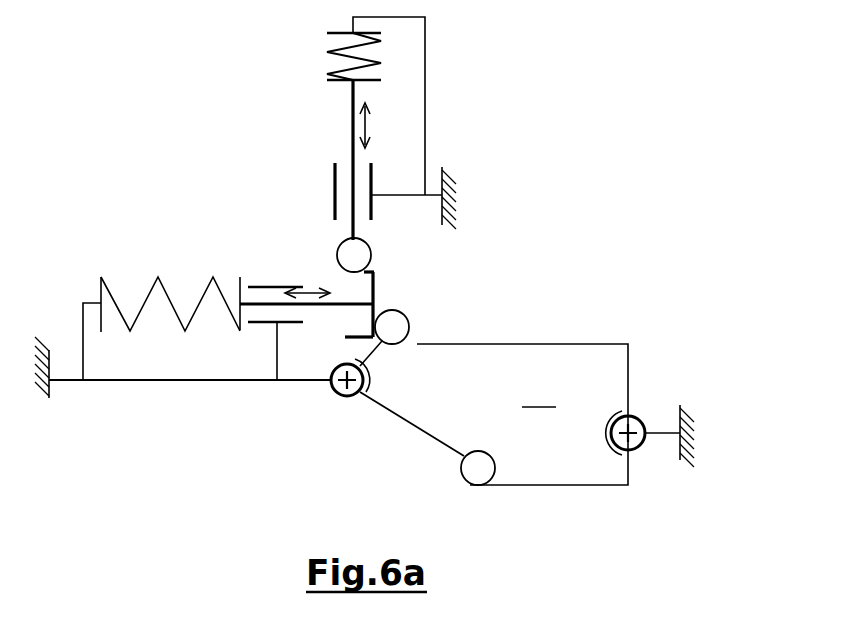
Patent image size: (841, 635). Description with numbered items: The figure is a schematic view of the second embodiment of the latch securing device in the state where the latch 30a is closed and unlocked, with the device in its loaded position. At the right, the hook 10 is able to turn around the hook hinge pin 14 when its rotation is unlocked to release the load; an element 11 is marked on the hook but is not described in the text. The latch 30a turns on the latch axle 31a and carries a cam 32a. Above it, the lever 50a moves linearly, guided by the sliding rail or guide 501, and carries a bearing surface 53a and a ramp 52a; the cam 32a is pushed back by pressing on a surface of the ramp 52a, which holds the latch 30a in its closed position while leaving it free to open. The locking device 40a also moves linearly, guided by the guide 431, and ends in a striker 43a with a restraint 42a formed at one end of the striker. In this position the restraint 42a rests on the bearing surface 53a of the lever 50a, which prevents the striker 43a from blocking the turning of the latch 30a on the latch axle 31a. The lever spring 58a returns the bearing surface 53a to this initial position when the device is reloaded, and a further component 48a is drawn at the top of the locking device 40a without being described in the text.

The hook 10 is at (585, 403).
The housing 11 is at (539, 391).
The hook hinge pin 14 is at (633, 438).
The latch 30a is at (425, 433).
The latch axle 31a is at (340, 398).
The cam 32a is at (392, 327).
The locking device 40a is at (290, 127).
The restraint 42a is at (354, 255).
The striker 43a is at (343, 243).
The guide 431 is at (371, 186).
The return spring 48a is at (333, 52).
The lever 50a is at (258, 272).
The guide 501 is at (256, 323).
The ramp 52a is at (375, 300).
The bearing surface 53a is at (366, 284).
The lever spring 58a is at (136, 280).